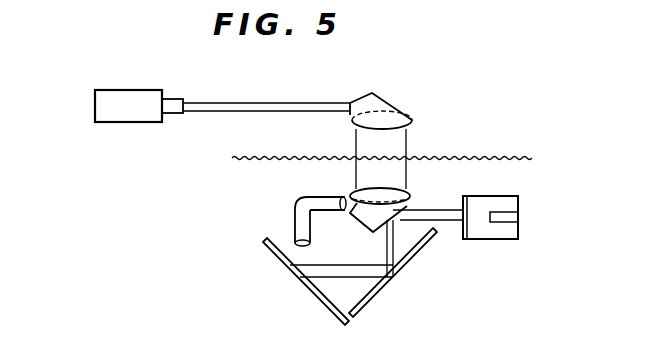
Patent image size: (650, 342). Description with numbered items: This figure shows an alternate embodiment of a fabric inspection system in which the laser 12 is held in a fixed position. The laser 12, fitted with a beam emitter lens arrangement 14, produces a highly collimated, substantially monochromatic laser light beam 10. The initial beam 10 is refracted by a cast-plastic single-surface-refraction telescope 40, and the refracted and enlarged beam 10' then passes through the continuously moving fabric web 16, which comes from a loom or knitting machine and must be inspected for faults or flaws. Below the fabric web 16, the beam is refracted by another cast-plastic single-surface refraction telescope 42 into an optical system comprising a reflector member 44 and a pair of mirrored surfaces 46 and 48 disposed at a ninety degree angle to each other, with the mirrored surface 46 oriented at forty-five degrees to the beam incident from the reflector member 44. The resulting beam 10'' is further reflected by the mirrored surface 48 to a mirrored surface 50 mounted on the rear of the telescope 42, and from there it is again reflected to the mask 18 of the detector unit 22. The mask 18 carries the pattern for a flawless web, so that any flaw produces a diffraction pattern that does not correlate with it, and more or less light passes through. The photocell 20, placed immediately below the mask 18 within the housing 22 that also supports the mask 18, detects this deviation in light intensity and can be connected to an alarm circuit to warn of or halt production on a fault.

The laser light beam 10 is at (266, 93).
The refracted and enlarged beam 10' is at (358, 157).
The reflected beam 10'' is at (341, 248).
The laser 12 is at (120, 93).
The beam emitter lens arrangement 14 is at (176, 102).
The fabric web 16 is at (487, 157).
The mask 18 is at (462, 200).
The photocell 20 is at (512, 223).
The housing 22 is at (506, 196).
The cast-plastic single-surface-refraction telescope 40 is at (389, 102).
The cast-plastic single-surface refraction telescope 42 is at (413, 197).
The reflector member 44 is at (305, 198).
The mirrored surface 46 is at (318, 303).
The mirrored surface 48 is at (386, 285).
The mirrored surface 50 is at (409, 204).